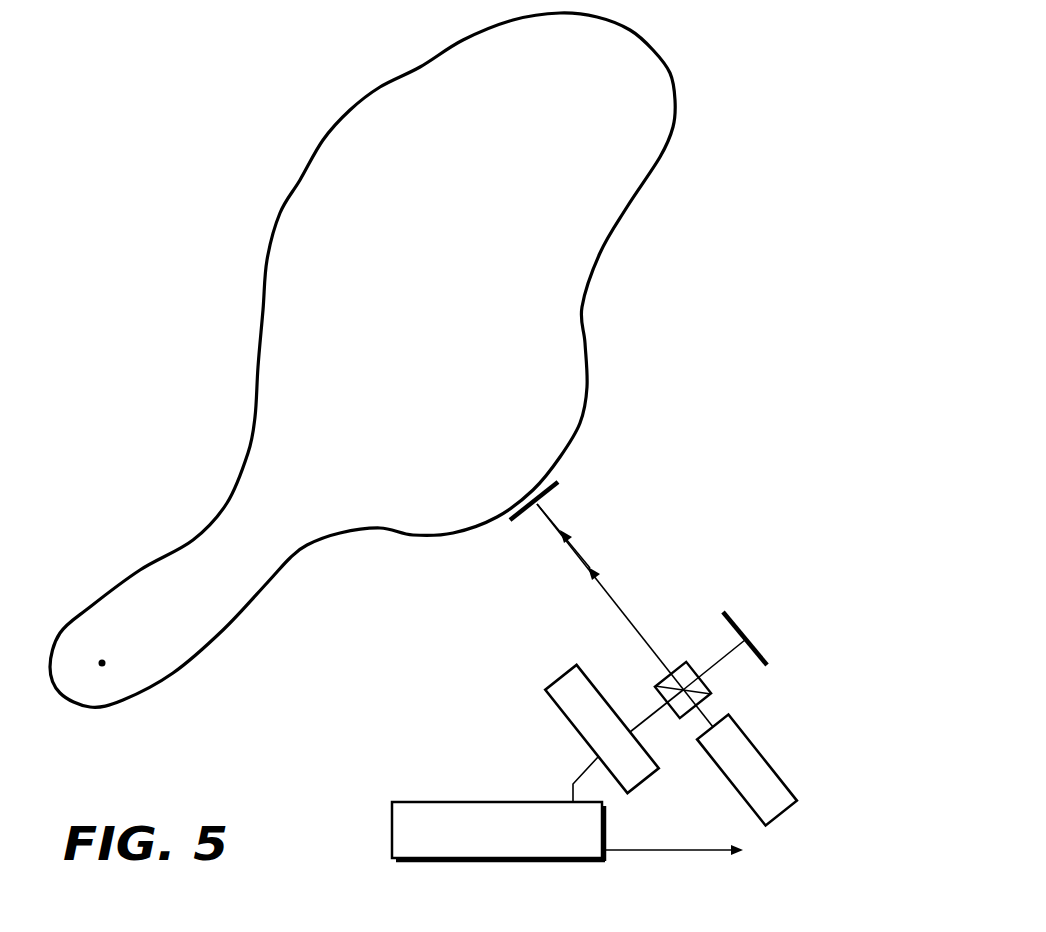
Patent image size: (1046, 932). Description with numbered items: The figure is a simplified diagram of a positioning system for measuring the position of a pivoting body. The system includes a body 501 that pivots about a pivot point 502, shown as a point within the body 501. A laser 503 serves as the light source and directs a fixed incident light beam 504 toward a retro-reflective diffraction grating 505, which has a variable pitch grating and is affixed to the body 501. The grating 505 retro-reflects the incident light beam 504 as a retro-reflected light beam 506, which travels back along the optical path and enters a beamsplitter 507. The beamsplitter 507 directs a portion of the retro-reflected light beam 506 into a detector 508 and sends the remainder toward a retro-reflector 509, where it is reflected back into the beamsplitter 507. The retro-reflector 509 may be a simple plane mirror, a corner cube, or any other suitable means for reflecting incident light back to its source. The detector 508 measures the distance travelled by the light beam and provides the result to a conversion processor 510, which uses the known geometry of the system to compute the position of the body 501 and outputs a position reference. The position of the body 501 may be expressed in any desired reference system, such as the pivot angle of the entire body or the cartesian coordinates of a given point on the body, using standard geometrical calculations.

The body 501 is at (675, 87).
The pivot point 502 is at (102, 663).
The laser 503 is at (769, 766).
The incident light beam 504 is at (563, 530).
The retro-reflective diffraction grating 505 is at (557, 486).
The retro-reflected light beam 506 is at (592, 569).
The beamsplitter 507 is at (703, 681).
The detector 508 is at (547, 692).
The retro-reflector 509 is at (768, 660).
The conversion processor 510 is at (446, 802).